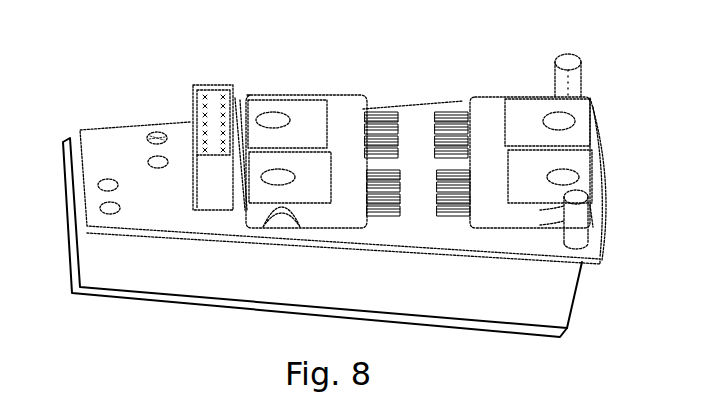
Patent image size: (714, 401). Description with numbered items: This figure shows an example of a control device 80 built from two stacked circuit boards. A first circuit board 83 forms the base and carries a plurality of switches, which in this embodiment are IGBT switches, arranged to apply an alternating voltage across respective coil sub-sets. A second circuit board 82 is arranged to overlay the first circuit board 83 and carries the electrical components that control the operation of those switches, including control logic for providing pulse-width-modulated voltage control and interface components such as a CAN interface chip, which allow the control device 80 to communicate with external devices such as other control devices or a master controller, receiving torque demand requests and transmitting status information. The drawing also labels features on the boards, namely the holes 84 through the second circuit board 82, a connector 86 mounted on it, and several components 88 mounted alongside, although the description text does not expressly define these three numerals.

The control device 80 is at (150, 55).
The second circuit board 82 is at (162, 210).
The first circuit board 83 is at (224, 276).
The mounting hole 84 is at (157, 132).
The connector 86 is at (217, 91).
The electronic module 88 is at (305, 107).